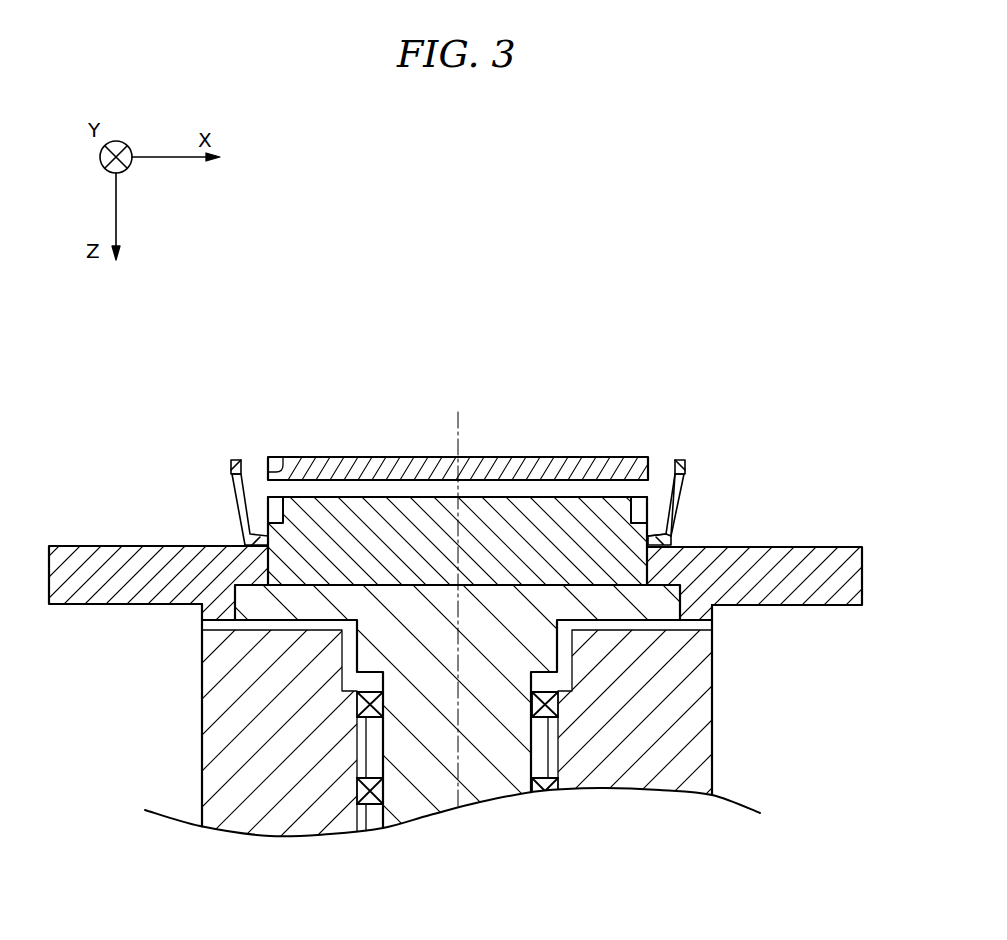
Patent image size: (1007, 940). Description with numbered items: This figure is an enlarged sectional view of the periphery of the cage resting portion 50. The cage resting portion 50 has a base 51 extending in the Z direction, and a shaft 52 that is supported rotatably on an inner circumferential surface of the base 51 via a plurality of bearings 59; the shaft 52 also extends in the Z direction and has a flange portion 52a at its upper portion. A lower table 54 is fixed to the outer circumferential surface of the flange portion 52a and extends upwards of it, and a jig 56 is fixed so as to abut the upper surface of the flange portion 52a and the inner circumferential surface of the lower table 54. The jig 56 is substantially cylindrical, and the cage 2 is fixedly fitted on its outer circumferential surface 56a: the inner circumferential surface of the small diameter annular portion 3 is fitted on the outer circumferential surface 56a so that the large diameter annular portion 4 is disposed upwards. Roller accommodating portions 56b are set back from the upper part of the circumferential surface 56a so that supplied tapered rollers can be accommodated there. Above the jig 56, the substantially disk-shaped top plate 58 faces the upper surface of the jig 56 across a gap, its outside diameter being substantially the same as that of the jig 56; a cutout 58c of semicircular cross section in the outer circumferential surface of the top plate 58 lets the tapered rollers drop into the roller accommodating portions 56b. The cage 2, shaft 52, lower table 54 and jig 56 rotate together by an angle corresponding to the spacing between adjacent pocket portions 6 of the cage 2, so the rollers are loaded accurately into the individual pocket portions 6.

The cage 2 is at (704, 478).
The small diameter annular portion 3 is at (672, 545).
The large diameter annular portion 4 is at (686, 470).
The pocket portions 6 is at (677, 502).
The cage resting portion 50 is at (152, 720).
The base 51 is at (680, 696).
The shaft 52 is at (502, 745).
The flange portion 52a is at (657, 606).
The lower table 54 is at (803, 567).
The jig 56 is at (293, 562).
The outer circumferential surface 56a is at (245, 543).
The roller accommodating portions 56b is at (270, 506).
The top plate 58 is at (618, 463).
The cutout 58c is at (270, 457).
The bearings 59 is at (358, 790).